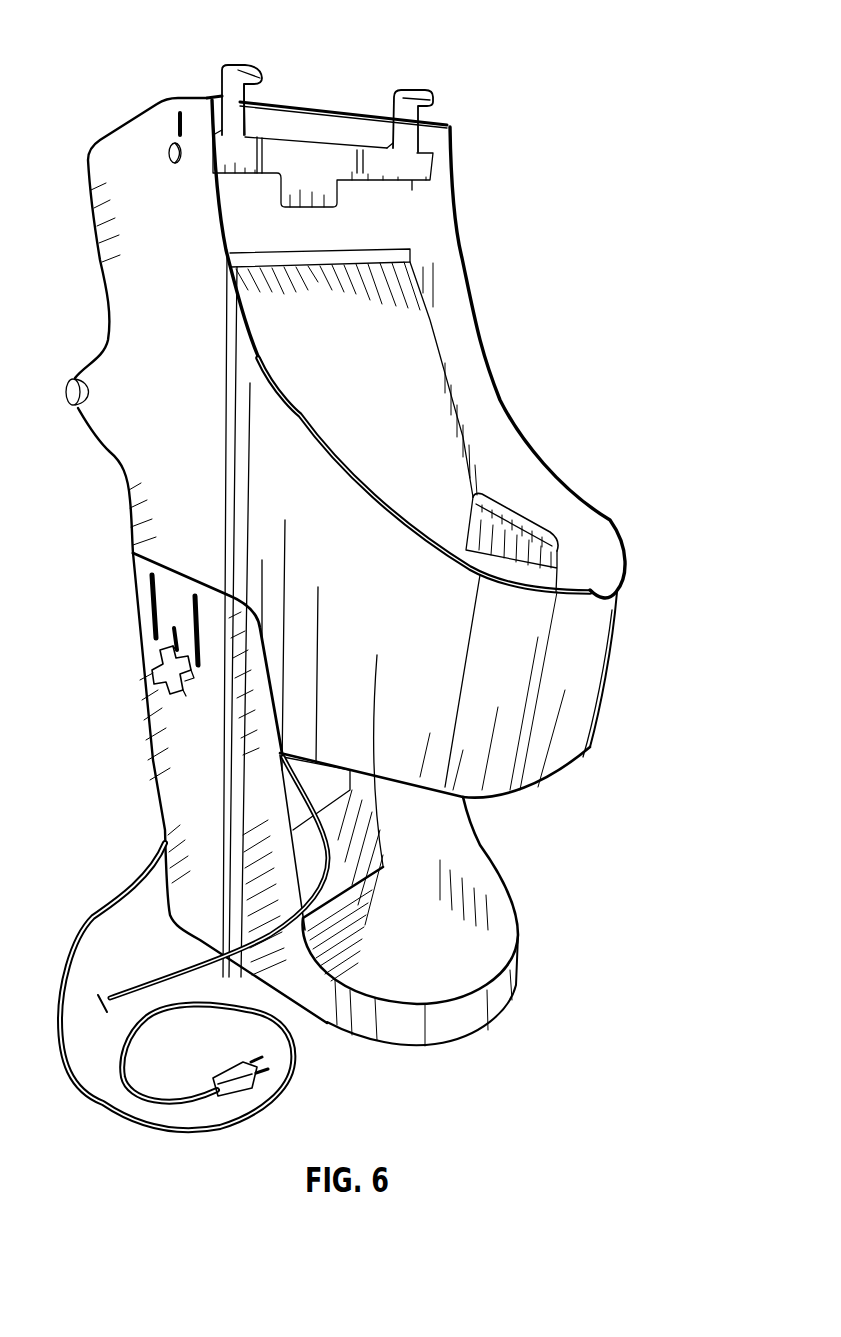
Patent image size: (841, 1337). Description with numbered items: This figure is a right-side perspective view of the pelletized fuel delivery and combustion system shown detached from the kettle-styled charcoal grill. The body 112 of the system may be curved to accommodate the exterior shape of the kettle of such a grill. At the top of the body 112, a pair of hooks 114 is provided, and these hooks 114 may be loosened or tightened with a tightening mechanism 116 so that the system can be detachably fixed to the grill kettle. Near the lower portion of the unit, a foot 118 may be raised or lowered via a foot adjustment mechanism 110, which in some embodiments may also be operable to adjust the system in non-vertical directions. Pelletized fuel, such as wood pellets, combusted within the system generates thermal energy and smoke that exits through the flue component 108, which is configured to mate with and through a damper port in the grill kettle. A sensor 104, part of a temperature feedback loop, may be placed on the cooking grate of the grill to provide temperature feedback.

The sensor 104 is at (137, 987).
The flue component 108 is at (527, 567).
The foot adjustment mechanism 110 is at (154, 664).
The body 112 is at (145, 310).
The hooks 114 is at (258, 76).
The tightening mechanism 116 is at (170, 147).
The foot 118 is at (168, 740).